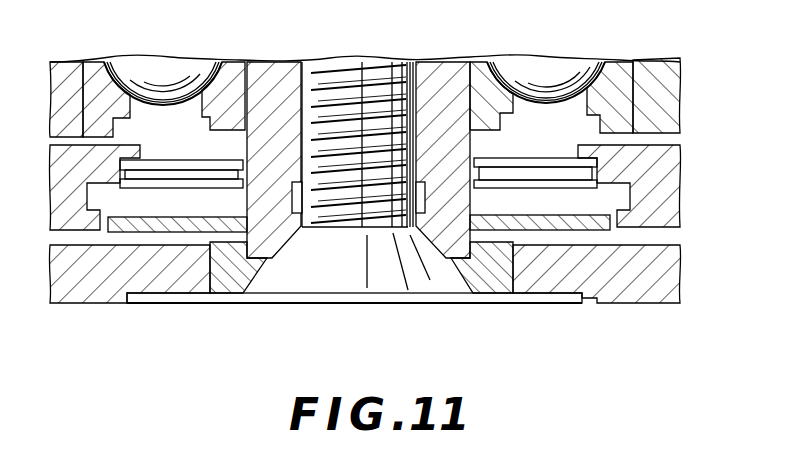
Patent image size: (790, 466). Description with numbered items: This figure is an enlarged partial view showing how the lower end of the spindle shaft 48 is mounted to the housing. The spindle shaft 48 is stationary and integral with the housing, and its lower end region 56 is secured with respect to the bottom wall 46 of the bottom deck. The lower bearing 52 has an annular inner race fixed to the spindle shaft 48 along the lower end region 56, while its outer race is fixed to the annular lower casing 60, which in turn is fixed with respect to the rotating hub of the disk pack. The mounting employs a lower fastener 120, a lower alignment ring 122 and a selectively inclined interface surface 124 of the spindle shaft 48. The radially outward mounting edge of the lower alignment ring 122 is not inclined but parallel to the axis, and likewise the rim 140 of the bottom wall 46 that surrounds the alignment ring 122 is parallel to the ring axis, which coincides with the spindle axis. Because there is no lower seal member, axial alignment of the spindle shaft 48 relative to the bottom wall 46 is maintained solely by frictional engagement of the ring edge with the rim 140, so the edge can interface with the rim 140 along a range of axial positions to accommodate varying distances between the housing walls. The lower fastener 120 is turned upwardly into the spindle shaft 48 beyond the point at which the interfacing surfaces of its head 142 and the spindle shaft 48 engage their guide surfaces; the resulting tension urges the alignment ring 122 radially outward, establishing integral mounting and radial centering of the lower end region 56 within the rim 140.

The bottom wall 46 is at (647, 287).
The spindle shaft 48 is at (270, 55).
The lower bearing 52 is at (155, 72).
The lower end region 56 is at (441, 72).
The lower casing 60 is at (657, 82).
The lower fastener 120 is at (309, 304).
The lower alignment ring 122 is at (229, 280).
The selectively inclined interface surface 124 is at (510, 220).
The rim 140 is at (494, 285).
The head 142 is at (430, 280).